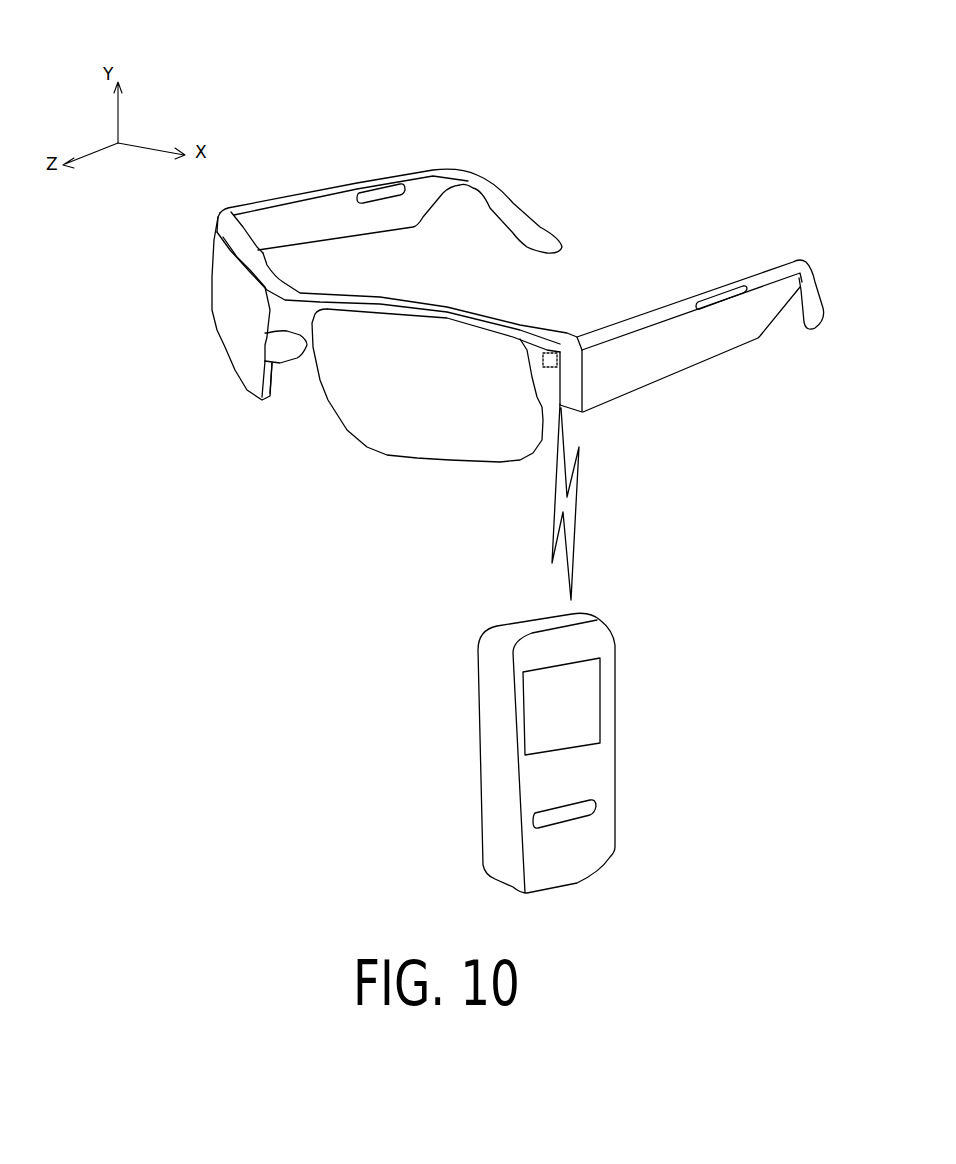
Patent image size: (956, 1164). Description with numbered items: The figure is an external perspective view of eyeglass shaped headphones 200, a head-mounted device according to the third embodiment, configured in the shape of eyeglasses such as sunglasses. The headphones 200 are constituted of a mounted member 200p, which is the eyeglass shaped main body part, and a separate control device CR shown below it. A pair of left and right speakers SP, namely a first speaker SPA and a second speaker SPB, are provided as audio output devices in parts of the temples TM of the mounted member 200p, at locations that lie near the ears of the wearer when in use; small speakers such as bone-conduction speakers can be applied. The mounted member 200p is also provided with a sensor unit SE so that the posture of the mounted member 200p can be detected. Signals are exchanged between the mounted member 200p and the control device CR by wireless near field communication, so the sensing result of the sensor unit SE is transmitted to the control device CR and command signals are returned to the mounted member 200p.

The eyeglass shaped headphones 200 is at (461, 99).
The mounted member 200p is at (379, 305).
The temples TM is at (278, 212).
The speakers SP is at (513, 212).
The first speaker SPA is at (376, 186).
The second speaker SPB is at (715, 292).
The sensor unit SE is at (552, 350).
The control device CR is at (490, 714).